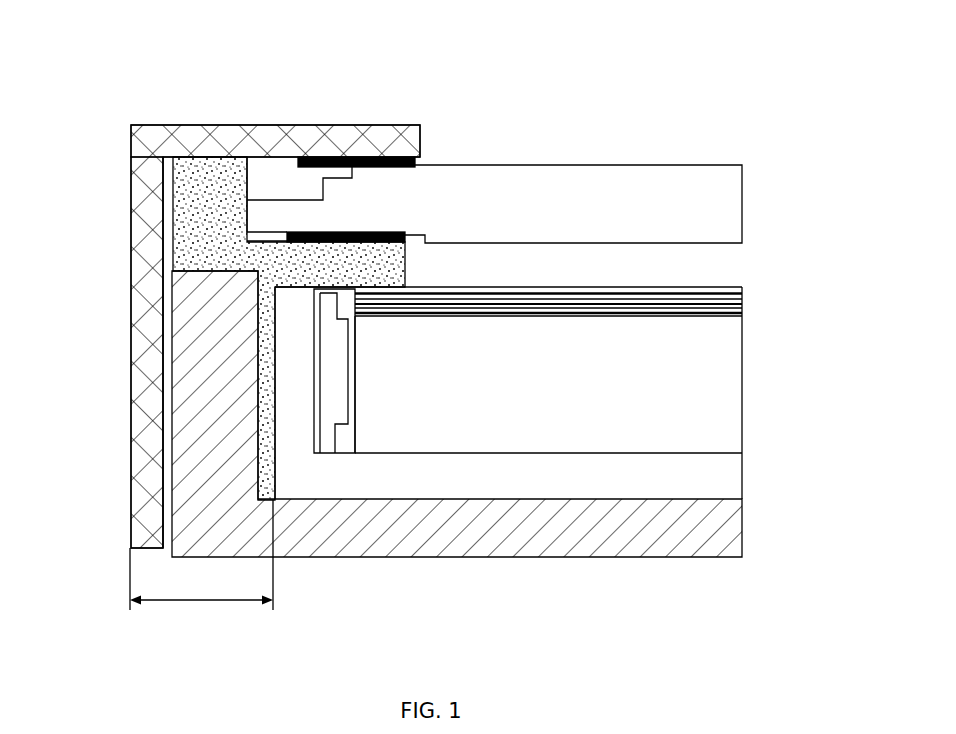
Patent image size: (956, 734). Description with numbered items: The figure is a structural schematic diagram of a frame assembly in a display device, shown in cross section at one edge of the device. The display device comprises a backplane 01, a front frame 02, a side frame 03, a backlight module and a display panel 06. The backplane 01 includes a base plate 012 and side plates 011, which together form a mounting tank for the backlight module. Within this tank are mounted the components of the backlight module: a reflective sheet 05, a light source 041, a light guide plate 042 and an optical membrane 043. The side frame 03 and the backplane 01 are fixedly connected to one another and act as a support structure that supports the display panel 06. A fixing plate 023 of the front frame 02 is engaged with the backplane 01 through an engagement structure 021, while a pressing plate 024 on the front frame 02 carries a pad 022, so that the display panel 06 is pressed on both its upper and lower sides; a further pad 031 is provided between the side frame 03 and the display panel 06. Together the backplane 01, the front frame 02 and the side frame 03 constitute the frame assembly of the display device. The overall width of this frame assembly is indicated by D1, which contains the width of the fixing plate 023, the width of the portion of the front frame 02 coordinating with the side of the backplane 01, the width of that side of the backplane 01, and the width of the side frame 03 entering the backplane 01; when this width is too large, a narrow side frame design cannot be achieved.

The backplane 01 is at (193, 347).
The side plate 011 is at (197, 425).
The base plate 012 is at (412, 538).
The front frame 02 is at (147, 318).
The engagement structure 021 is at (165, 407).
The fixing plate 023 is at (148, 355).
The pressing plate 024 is at (282, 137).
The side frame 03 is at (207, 206).
The pad 022 is at (410, 152).
The pad 031 is at (408, 230).
The display panel 06 is at (725, 220).
The reflective sheet 05 is at (677, 480).
The light source 041 is at (330, 385).
The light guide plate 042 is at (715, 372).
The optical membrane 043 is at (742, 293).
The width of the frame assembly D1 is at (201, 555).